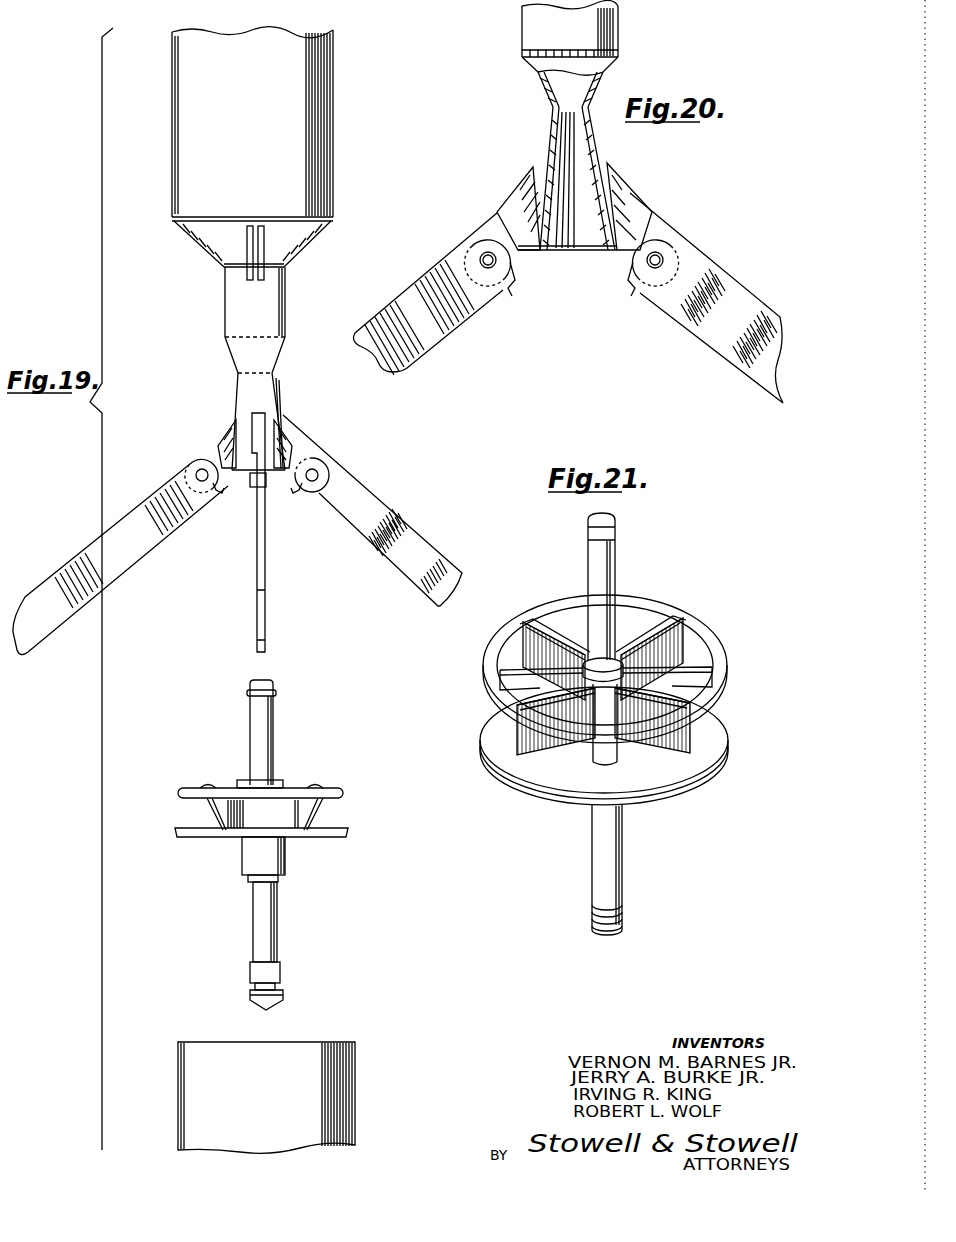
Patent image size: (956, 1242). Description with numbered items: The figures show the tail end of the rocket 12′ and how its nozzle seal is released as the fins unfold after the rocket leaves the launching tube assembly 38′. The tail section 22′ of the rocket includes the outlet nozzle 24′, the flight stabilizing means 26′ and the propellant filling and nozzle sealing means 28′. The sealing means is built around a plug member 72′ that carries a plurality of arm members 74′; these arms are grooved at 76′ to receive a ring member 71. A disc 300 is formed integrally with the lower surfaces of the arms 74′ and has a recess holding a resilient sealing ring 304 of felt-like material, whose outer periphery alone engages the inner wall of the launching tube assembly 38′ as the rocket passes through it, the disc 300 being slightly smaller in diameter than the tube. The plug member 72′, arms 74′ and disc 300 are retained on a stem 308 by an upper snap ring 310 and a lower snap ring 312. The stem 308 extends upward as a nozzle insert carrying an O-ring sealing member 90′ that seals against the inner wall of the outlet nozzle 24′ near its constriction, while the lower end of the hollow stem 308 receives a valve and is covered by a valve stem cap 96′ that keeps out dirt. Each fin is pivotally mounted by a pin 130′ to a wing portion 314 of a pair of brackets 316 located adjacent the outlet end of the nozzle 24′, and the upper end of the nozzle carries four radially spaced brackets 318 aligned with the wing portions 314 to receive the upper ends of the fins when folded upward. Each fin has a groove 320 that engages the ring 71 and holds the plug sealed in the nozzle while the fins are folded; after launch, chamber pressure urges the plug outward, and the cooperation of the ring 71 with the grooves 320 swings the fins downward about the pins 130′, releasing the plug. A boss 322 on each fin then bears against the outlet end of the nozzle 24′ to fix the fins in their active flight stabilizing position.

In FIG. 19, the body tube 12′ is at (362, 57).
In FIG. 20, the body tube 12′ is at (504, 35).
In FIG. 19, the tail section 22′ is at (190, 298).
In FIG. 19, the outlet nozzle 24′ is at (233, 421).
In FIG. 20, the outlet nozzle 24′ is at (577, 240).
In FIG. 19, the flight stabilizing means 26′ is at (381, 455).
In FIG. 19, the propellant filling and nozzle sealing means 28′ is at (324, 858).
In FIG. 21, the propellant filling and nozzle sealing means 28′ is at (553, 811).
In FIG. 19, the launching tube assembly 38′ is at (316, 1043).
In FIG. 19, the ring member 71 is at (342, 792).
In FIG. 21, the ring member 71 is at (487, 667).
In FIG. 21, the plug member 72′ is at (584, 655).
In FIG. 19, the arm members 74′ is at (206, 805).
In FIG. 21, the arm members 74′ is at (538, 630).
In FIG. 21, the grooves 76′ is at (522, 622).
In FIG. 19, the O-ring sealing member 90′ is at (276, 692).
In FIG. 21, the O-ring sealing member 90′ is at (616, 537).
In FIG. 19, the valve stem cap 96′ is at (252, 972).
In FIG. 19, the pivot pin 130′ is at (200, 475).
In FIG. 20, the pivot pin 130′ is at (481, 256).
In FIG. 19, the disc 300 is at (176, 830).
In FIG. 21, the disc 300 is at (489, 715).
In FIG. 19, the resilient sealing ring 304 is at (181, 840).
In FIG. 21, the resilient sealing ring 304 is at (482, 757).
In FIG. 19, the stem 308 is at (254, 898).
In FIG. 21, the stem 308 is at (607, 870).
In FIG. 19, the upper snap ring 310 is at (278, 786).
In FIG. 21, the upper snap ring 310 is at (616, 660).
In FIG. 19, the lower snap ring 312 is at (278, 878).
In FIG. 19, the wing portion 314 is at (218, 445).
In FIG. 20, the wing portion 314 is at (505, 215).
In FIG. 19, the brackets 316 is at (270, 430).
In FIG. 19, the brackets 318 is at (313, 243).
In FIG. 19, the groove 320 is at (216, 494).
In FIG. 20, the groove 320 is at (510, 298).
In FIG. 20, the boss 322 is at (588, 245).